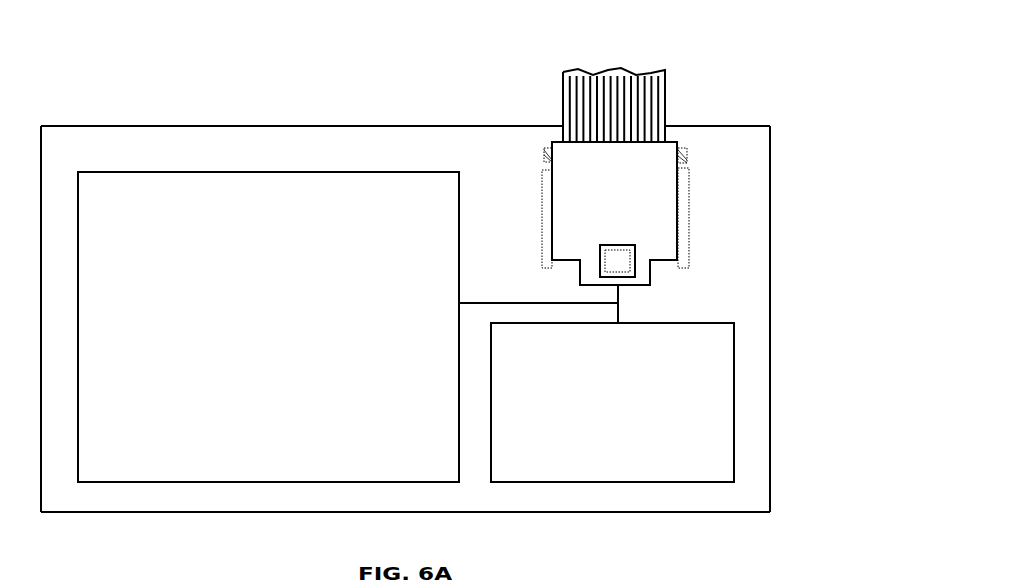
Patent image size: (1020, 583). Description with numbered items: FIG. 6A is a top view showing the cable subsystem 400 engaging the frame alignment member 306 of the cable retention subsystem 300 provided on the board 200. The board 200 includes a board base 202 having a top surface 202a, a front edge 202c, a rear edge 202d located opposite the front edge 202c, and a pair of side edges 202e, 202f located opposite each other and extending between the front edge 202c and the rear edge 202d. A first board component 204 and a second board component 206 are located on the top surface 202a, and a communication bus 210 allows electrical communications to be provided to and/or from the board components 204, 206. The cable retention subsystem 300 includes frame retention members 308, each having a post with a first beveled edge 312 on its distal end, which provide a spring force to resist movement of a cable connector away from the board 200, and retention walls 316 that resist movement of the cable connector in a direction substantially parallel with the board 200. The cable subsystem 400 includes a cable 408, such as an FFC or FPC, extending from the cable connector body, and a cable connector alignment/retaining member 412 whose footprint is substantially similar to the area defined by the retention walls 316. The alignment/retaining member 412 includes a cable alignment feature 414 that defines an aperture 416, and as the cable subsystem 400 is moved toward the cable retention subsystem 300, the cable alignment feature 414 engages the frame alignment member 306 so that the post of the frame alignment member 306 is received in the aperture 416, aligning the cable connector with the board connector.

The board 200 is at (151, 83).
The board base 202 is at (438, 321).
The top surface 202a is at (407, 512).
The front edge 202c is at (258, 512).
The rear edge 202d is at (385, 125).
The side edge 202e is at (41, 481).
The side edge 202f is at (770, 437).
The first board component 204 is at (333, 172).
The second board component 206 is at (573, 482).
The communication bus 210 is at (485, 303).
The cable retention subsystem 300 is at (542, 170).
The frame alignment member 306 is at (623, 260).
The frame retention member 308 is at (682, 153).
The first beveled edge 312 is at (680, 147).
The retention wall 316 is at (690, 203).
The cable subsystem 400 is at (680, 258).
The cable 408 is at (570, 70).
The cable connector alignment/retaining member 412 is at (678, 247).
The cable alignment feature 414 is at (650, 285).
The aperture 416 is at (600, 275).